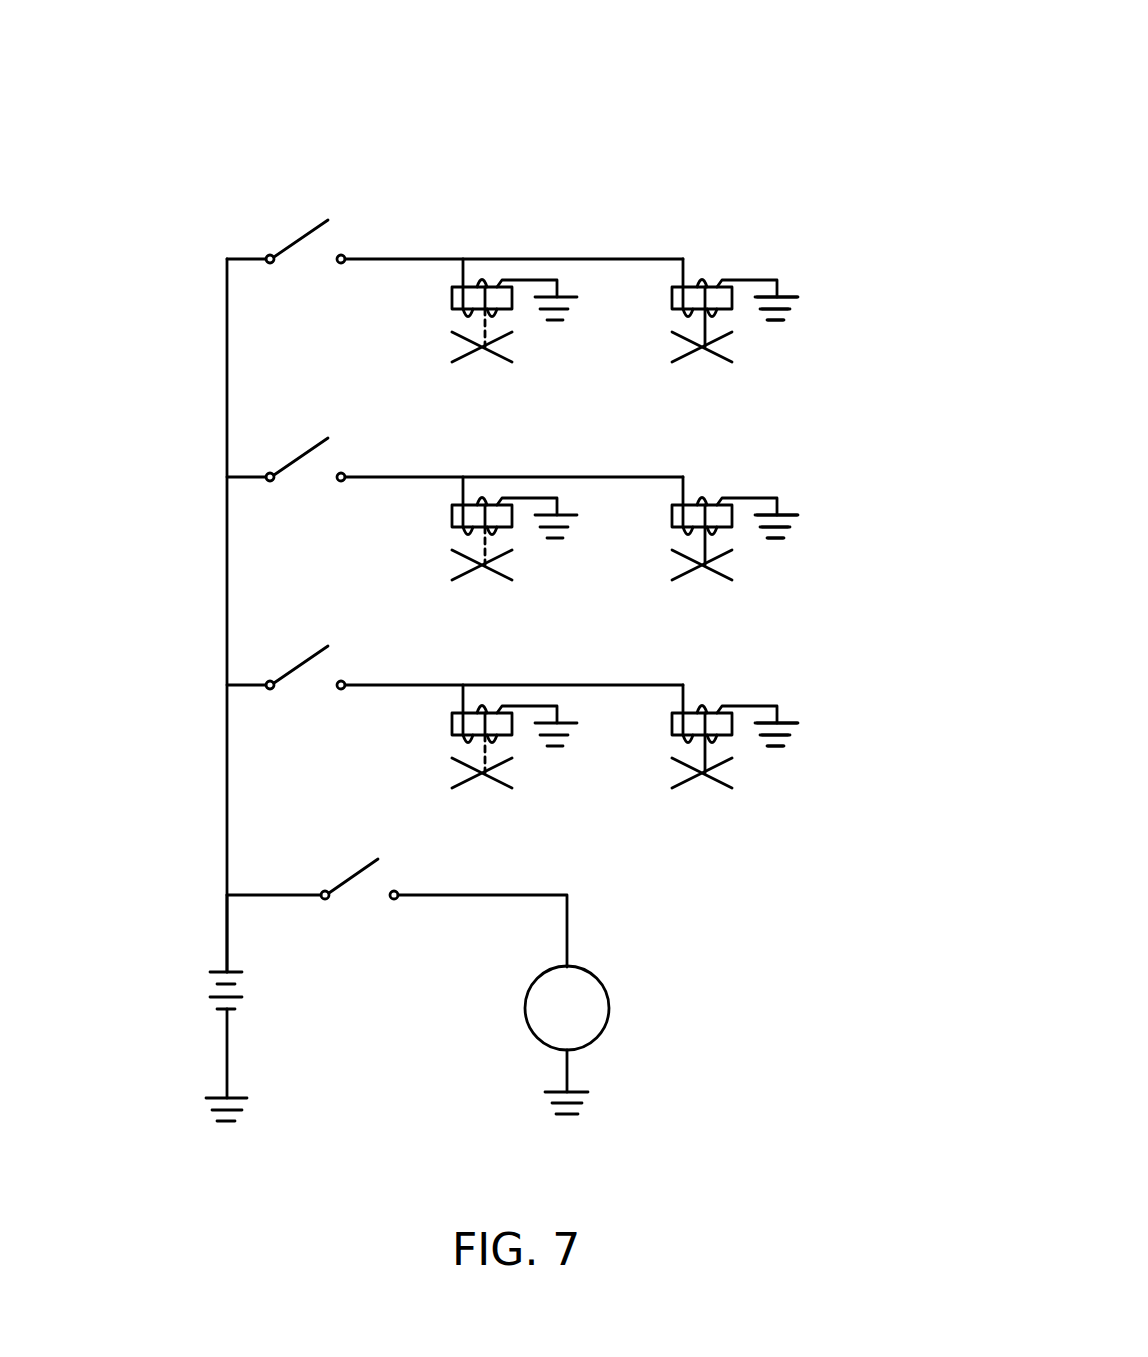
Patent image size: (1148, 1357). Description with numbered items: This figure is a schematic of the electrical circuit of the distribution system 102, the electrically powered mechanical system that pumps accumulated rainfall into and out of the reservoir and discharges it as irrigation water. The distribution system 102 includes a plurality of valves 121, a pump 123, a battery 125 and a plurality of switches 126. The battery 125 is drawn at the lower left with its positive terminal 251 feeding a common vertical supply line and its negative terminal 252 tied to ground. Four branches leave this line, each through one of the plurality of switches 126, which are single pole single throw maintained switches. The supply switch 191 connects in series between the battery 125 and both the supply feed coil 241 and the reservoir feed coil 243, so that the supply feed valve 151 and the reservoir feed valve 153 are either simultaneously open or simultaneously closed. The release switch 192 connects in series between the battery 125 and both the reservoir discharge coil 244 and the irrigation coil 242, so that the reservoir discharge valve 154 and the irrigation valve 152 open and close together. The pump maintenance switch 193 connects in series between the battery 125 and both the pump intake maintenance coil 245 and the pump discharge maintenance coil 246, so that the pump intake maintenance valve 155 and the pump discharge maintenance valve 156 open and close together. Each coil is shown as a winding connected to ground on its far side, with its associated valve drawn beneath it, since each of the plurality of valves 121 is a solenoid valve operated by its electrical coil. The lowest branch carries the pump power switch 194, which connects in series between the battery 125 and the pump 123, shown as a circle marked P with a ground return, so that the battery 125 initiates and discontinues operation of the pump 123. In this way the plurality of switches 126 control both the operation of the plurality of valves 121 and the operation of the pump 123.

The distribution system 102 is at (802, 92).
The plurality of valves 121 is at (855, 298).
The pump 123 is at (609, 1008).
The battery 125 is at (243, 989).
The plurality of switches 126 is at (210, 157).
The supply feed valve 151 is at (478, 360).
The irrigation valve 152 is at (700, 578).
The reservoir feed valve 153 is at (700, 360).
The reservoir discharge valve 154 is at (478, 578).
The pump intake maintenance valve 155 is at (485, 786).
The pump discharge maintenance valve 156 is at (703, 786).
The supply switch 191 is at (300, 239).
The release switch 192 is at (300, 457).
The pump maintenance switch 193 is at (300, 665).
The pump power switch 194 is at (352, 877).
The supply feed coil 241 is at (485, 268).
The irrigation coil 242 is at (706, 485).
The reservoir feed coil 243 is at (706, 267).
The reservoir discharge coil 244 is at (485, 486).
The pump intake maintenance coil 245 is at (485, 694).
The pump discharge maintenance coil 246 is at (706, 693).
The positive terminal 251 is at (226, 930).
The negative terminal 252 is at (226, 1043).